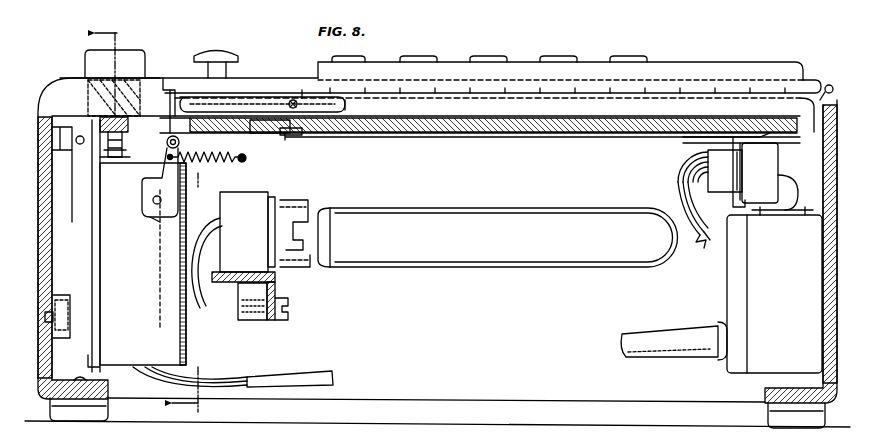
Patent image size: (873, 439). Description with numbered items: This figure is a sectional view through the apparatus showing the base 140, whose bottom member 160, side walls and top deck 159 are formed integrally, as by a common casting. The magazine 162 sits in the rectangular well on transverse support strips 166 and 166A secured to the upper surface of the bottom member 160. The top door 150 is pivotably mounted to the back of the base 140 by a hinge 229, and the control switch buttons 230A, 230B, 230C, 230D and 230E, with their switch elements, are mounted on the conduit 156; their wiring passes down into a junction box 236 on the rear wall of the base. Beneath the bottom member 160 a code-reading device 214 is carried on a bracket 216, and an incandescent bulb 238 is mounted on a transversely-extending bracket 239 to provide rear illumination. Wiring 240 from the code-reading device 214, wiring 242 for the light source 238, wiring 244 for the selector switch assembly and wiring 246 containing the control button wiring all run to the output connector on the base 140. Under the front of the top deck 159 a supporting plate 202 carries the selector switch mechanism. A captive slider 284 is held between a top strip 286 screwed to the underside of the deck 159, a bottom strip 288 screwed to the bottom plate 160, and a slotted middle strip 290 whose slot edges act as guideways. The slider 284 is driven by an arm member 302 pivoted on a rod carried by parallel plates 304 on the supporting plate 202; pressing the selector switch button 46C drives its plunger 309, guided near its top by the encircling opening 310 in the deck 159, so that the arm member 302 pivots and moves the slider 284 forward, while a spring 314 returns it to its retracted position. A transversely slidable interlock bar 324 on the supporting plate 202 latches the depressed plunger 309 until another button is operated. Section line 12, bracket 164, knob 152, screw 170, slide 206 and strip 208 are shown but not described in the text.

The selector switch button 46C is at (88, 77).
The section line 12- 12 is at (160, 221).
The base 140 is at (84, 263).
The top door 150 is at (679, 92).
The knob 152 is at (222, 48).
The conduit 156 is at (795, 62).
The top deck 159 is at (76, 78).
The bottom member 160 is at (528, 122).
The magazine 162 is at (500, 105).
The bracket 164 is at (170, 80).
The transverse support strip 166 is at (390, 120).
The transverse support strip 166A is at (663, 122).
The screw 170 is at (292, 100).
The supporting plate 202 is at (100, 265).
The slide plate 206 is at (720, 103).
The strip 208 is at (598, 125).
The code-reading device 214 is at (770, 168).
The bracket 216 is at (735, 196).
The hinge 229 is at (831, 85).
The control switch button 230A is at (347, 62).
The control switch button 230B is at (430, 55).
The control switch button 230C is at (497, 55).
The control switch button 230D is at (563, 55).
The control switch button 230E is at (633, 55).
The junction box 236 is at (774, 290).
The incandescent bulb 238 is at (512, 258).
The transversely-extending bracket 239 is at (278, 291).
The wiring 240 is at (690, 190).
The wiring 242 is at (201, 308).
The wiring 244 is at (240, 378).
The wiring 246 is at (655, 335).
The captive slider 284 is at (180, 142).
The top strip 286 is at (126, 137).
The bottom strip 288 is at (298, 134).
The middle strip 290 is at (260, 128).
The arm member 302 is at (152, 180).
The parallel plate 304 is at (160, 216).
The selector-switch plunger 309 is at (112, 157).
The encircling opening 310 is at (247, 158).
The spring 314 is at (215, 160).
The interlock bar 324 is at (52, 117).